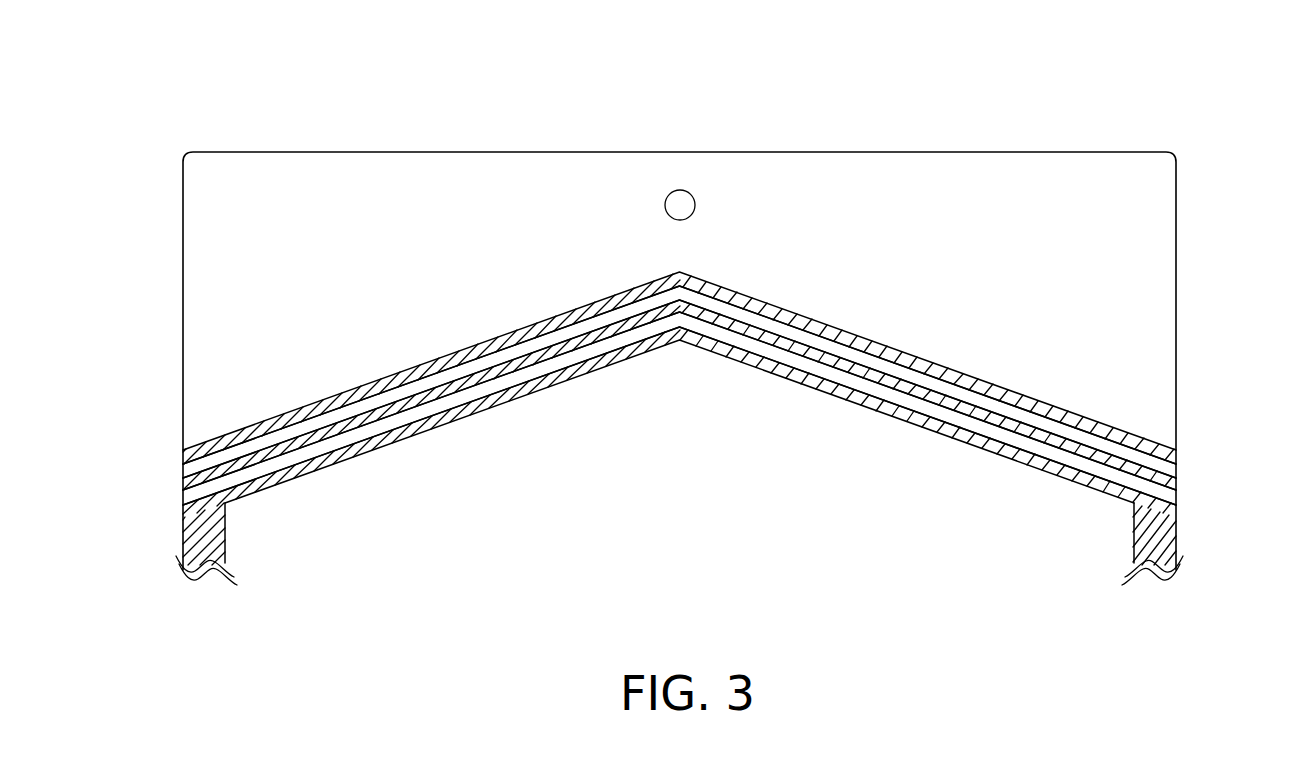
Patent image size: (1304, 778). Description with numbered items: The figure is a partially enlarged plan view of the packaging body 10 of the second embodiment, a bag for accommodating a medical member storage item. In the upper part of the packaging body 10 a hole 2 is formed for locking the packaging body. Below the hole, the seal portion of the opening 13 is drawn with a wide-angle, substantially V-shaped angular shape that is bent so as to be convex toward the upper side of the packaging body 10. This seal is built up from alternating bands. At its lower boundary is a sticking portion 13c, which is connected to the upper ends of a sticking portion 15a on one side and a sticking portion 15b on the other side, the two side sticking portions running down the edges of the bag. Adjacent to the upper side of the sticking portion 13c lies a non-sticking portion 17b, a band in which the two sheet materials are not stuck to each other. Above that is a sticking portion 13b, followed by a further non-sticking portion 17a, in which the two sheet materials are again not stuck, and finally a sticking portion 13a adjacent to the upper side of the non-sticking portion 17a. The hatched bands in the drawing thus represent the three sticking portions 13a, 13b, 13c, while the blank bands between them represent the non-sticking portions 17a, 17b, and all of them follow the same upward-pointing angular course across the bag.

The hole 2 is at (680, 198).
The packaging body 10 is at (1192, 171).
The opening 13 is at (679, 354).
The sticking portion 13a is at (1060, 417).
The sticking portion 13b is at (902, 388).
The sticking portion 13c is at (582, 374).
The non-sticking portion 17a is at (977, 403).
The non-sticking portion 17b is at (800, 365).
The sticking portion 15a is at (198, 532).
The sticking portion 15b is at (1152, 535).